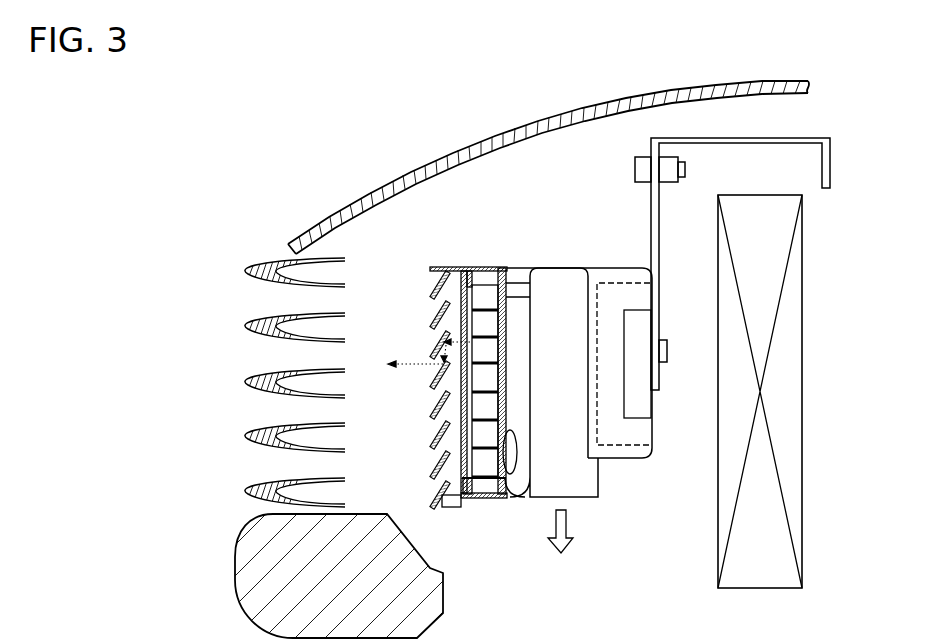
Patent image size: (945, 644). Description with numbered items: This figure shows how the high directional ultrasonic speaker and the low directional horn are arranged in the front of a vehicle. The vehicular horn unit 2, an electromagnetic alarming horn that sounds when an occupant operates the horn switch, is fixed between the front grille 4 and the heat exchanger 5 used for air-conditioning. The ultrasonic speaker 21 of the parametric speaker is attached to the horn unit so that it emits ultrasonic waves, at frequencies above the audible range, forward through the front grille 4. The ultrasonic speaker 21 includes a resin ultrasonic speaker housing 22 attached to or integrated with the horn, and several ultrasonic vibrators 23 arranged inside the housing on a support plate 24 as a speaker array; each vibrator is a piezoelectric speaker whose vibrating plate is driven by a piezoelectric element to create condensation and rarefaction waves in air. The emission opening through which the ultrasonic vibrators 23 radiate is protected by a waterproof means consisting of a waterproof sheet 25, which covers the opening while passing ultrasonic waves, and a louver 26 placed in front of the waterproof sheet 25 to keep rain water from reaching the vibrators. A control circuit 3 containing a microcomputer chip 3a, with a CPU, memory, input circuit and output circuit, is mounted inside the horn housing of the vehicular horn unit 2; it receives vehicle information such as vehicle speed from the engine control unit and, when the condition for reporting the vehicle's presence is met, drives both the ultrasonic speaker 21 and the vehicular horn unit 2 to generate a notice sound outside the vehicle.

The vehicular horn unit 2 is at (556, 263).
The control circuit 3 is at (613, 283).
The microcomputer chip 3a is at (648, 310).
The front grille 4 is at (250, 325).
The heat exchanger 5 is at (797, 377).
The ultrasonic speaker 21 is at (507, 254).
The ultrasonic speaker housing 22 is at (484, 500).
The ultrasonic vibrators 23 is at (480, 463).
The support plate 24 is at (473, 477).
The waterproof sheet 25 is at (461, 381).
The louver 26 is at (432, 355).